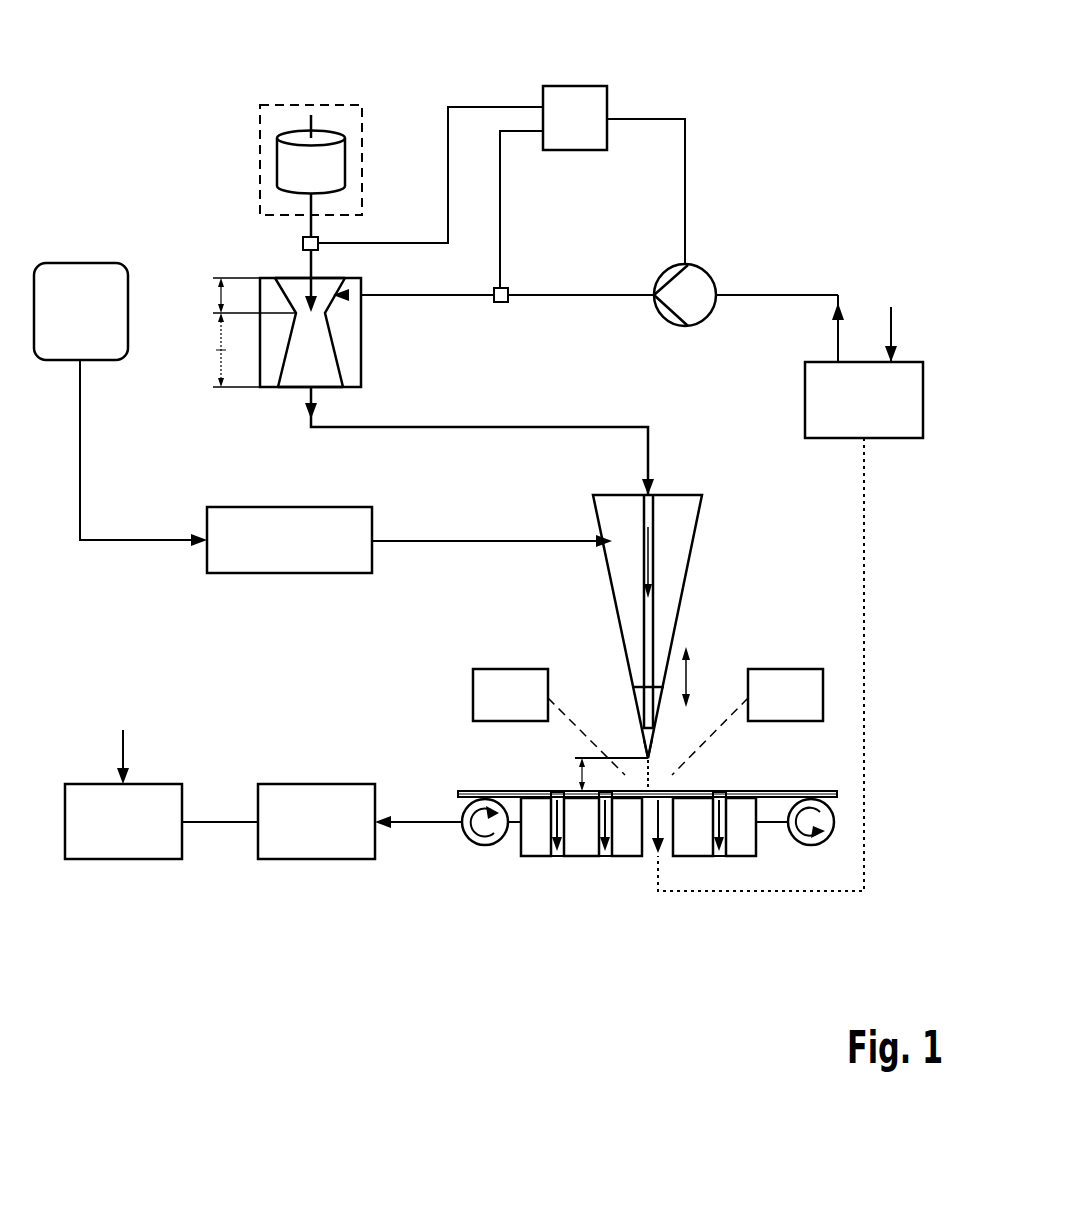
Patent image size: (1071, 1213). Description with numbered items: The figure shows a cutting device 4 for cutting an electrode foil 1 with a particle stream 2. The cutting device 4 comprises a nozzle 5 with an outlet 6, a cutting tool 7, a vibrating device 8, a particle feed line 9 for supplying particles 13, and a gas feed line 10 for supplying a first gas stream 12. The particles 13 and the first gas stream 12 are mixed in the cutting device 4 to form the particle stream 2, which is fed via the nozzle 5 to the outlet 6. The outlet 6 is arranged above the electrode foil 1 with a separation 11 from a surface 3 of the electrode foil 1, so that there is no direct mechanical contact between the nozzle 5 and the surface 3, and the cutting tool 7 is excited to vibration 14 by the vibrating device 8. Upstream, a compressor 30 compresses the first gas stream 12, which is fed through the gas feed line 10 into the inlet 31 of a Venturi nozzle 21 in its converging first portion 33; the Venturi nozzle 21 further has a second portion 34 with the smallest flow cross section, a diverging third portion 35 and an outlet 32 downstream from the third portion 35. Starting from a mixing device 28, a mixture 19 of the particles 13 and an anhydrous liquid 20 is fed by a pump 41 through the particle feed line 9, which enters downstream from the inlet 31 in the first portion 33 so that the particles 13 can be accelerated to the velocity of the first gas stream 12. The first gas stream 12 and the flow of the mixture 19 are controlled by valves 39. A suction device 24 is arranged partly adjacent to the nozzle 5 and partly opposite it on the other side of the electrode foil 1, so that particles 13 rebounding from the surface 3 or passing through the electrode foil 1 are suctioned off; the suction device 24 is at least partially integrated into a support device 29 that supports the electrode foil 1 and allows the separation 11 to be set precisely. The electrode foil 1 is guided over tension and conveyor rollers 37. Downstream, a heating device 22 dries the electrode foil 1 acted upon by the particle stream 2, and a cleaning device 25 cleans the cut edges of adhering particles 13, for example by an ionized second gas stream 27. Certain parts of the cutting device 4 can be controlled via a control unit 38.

The electrode foil 1 is at (805, 790).
The particle stream 2 is at (318, 395).
The surface 3 is at (772, 790).
The cutting device 4 is at (797, 123).
The nozzle 5 is at (700, 522).
The outlet 6 is at (652, 742).
The cutting tool 7 is at (633, 708).
The vibrating device 8 is at (80, 262).
The particle feed line 9 is at (778, 297).
The gas feed line 10 is at (309, 276).
The separation 11 is at (577, 775).
The first gas stream 12 is at (313, 258).
The particles 13 is at (893, 422).
The vibration 14 is at (692, 678).
The mixture 19 is at (598, 294).
The anhydrous liquid 20 is at (800, 294).
The Venturi nozzle 21 is at (346, 340).
The heating device 22 is at (316, 860).
The suction device 24 is at (511, 668).
The cleaning device 25 is at (123, 860).
The ionized second gas stream 27 is at (127, 747).
The mixing device 28 is at (906, 360).
The support device 29 is at (580, 857).
The compressor 30 is at (322, 133).
The inlet 31 is at (310, 276).
The outlet 32 is at (300, 395).
The converging first portion 33 is at (212, 294).
The second portion 34 is at (212, 328).
The diverging third portion 35 is at (212, 362).
The tension and conveyor rollers 37 is at (487, 846).
The control unit 38 is at (575, 85).
The valves 39 is at (320, 235).
The pump 41 is at (679, 328).